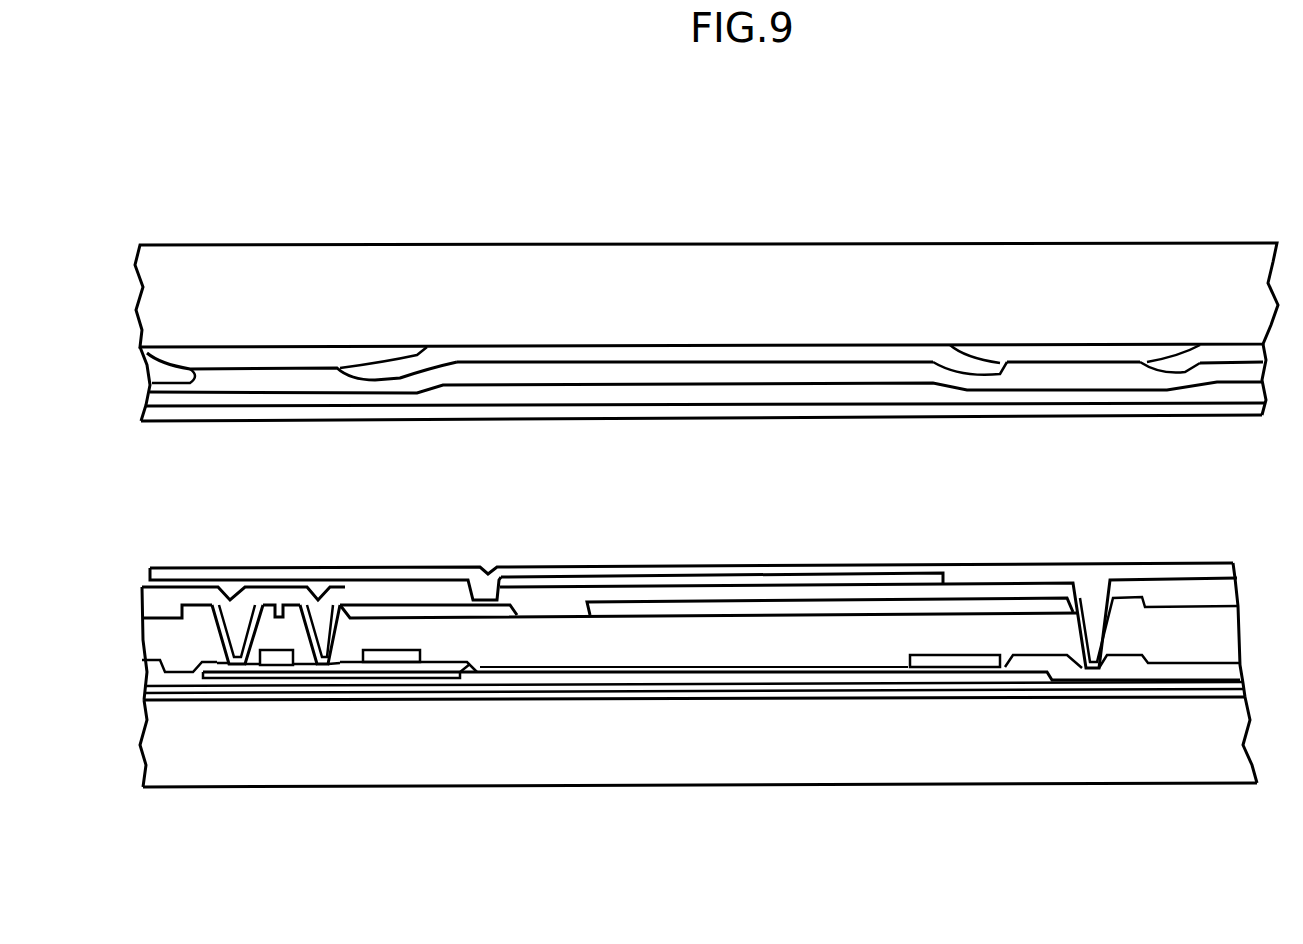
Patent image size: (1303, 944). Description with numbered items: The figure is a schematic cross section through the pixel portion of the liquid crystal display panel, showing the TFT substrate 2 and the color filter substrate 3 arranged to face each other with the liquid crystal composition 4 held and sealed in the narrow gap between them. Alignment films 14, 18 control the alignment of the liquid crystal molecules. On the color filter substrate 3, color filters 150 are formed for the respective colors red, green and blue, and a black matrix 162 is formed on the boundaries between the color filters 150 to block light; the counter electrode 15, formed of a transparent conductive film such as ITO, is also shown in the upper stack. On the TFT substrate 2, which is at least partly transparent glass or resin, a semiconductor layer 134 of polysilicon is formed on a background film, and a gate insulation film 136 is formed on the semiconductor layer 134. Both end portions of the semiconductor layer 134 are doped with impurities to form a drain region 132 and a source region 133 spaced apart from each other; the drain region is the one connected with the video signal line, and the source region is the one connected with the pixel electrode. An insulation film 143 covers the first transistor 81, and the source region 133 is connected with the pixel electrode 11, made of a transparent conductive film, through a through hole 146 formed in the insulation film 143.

The TFT substrate 2 is at (762, 722).
The color filter substrate 3 is at (740, 300).
The liquid crystal composition 4 is at (363, 453).
The pixel electrode 11 is at (628, 577).
The alignment film 14 is at (740, 568).
The counter electrode 15 is at (563, 397).
The alignment film 18 is at (470, 410).
The first transistor 81 is at (267, 667).
The drain region 132 is at (225, 678).
The source region 133 is at (357, 678).
The semiconductor layer 134 is at (295, 672).
The gate insulation film 136 is at (475, 677).
The insulation film 143 is at (843, 638).
The through hole 146 is at (325, 592).
The color filter 150 is at (817, 363).
The black matrix 162 is at (1040, 353).